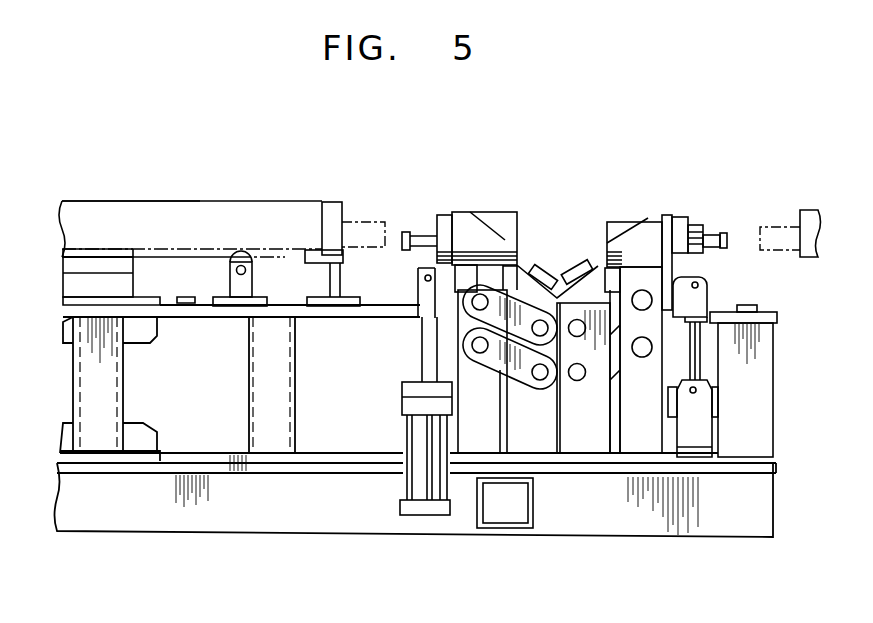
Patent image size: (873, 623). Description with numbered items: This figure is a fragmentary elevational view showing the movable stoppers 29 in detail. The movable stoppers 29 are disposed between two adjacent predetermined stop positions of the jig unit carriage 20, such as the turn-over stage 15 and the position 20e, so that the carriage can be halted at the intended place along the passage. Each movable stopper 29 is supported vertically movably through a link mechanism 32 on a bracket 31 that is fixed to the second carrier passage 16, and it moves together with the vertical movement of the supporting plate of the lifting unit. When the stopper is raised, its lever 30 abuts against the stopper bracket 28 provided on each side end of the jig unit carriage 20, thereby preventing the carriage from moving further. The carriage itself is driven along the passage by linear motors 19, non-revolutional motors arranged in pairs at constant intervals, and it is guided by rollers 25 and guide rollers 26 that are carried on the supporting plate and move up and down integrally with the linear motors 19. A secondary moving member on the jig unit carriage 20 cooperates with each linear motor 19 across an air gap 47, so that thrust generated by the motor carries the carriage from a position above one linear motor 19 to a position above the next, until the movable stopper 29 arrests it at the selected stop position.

The turn-over stage 15 is at (814, 184).
The second carrier passage 16 is at (747, 517).
The linear motor 19 is at (121, 265).
The jig unit carriage 20 is at (293, 192).
The position 20e is at (194, 193).
The roller 25 is at (240, 257).
The guide roller 26 is at (322, 252).
The stopper bracket 28 is at (387, 222).
The movable stopper 29 is at (662, 192).
The lever 30 is at (475, 217).
The bracket 31 is at (543, 437).
The link mechanism 32 is at (528, 293).
The air gap 47 is at (90, 247).